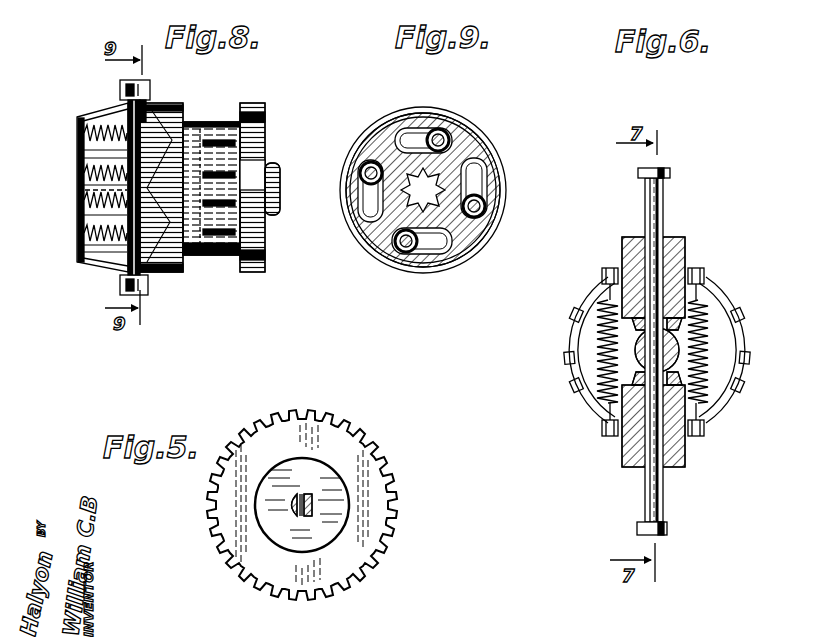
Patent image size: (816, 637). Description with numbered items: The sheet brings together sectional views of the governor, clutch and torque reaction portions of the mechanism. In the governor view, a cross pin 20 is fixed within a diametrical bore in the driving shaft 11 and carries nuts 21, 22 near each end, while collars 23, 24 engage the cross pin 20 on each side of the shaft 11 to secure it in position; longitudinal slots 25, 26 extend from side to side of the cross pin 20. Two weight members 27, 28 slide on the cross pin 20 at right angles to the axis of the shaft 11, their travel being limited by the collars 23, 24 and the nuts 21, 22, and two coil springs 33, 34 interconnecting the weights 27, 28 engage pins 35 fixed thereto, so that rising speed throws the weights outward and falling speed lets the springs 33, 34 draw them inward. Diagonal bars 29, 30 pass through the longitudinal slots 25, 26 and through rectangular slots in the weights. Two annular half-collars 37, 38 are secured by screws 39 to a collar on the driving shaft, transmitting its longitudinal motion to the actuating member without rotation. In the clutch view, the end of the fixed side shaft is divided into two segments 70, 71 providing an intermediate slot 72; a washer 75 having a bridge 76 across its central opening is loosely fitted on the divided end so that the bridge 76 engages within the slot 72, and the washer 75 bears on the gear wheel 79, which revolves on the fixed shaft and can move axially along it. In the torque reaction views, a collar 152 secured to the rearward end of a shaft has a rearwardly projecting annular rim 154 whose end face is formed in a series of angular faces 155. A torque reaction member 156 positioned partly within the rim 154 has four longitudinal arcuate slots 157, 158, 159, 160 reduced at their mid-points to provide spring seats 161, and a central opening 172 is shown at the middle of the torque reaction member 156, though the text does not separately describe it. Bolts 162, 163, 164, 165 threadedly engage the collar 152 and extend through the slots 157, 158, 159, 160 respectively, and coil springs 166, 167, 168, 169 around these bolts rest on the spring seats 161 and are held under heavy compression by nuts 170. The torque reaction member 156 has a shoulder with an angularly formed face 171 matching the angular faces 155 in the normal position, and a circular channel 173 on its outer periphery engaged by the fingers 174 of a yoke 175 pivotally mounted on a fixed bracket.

In FIG. 8, the nuts 170 is at (77, 124).
In FIG. 8, the fingers 174 is at (120, 93).
In FIG. 8, the yoke 175 is at (150, 82).
In FIG. 8, the angular faces 155 is at (168, 110).
In FIG. 8, the collar 152 is at (220, 122).
In FIG. 8, the torque reaction member 156 is at (80, 188).
In FIG. 8, the coil spring 167 is at (85, 197).
In FIG. 9, the coil spring 167 is at (488, 205).
In FIG. 8, the bolt 163 is at (85, 217).
In FIG. 9, the bolt 163 is at (492, 212).
In FIG. 8, the circular channel 173 is at (122, 282).
In FIG. 8, the angularly formed face 171 is at (150, 272).
In FIG. 8, the annular rim 154 is at (183, 265).
In FIG. 9, the spring seats 161 is at (403, 125).
In FIG. 9, the longitudinal arcuate slot 157 is at (421, 130).
In FIG. 9, the coil spring 166 is at (448, 130).
In FIG. 9, the bolt 162 is at (445, 132).
In FIG. 9, the longitudinal arcuate slot 160 is at (365, 195).
In FIG. 9, the bolt 165 is at (358, 162).
In FIG. 9, the coil spring 169 is at (366, 172).
In FIG. 9, the longitudinal arcuate slot 158 is at (484, 175).
In FIG. 9, the longitudinal arcuate slot 159 is at (440, 253).
In FIG. 9, the bolt 164 is at (380, 250).
In FIG. 9, the coil spring 168 is at (405, 252).
In FIG. 9, the intermediate slot 172 is at (423, 190).
In FIG. 6, the nut 21 is at (670, 173).
In FIG. 6, the longitudinal slot 25 is at (664, 201).
In FIG. 6, the weight member 27 is at (685, 242).
In FIG. 6, the weight member 28 is at (625, 468).
In FIG. 6, the diagonal bar 29 is at (678, 272).
In FIG. 6, the diagonal bar 30 is at (625, 447).
In FIG. 6, the shaft 11 is at (672, 345).
In FIG. 6, the annular half-collar 37 is at (570, 323).
In FIG. 6, the annular half-collar 38 is at (568, 357).
In FIG. 6, the screws 39 is at (575, 313).
In FIG. 6, the coil spring 34 is at (600, 300).
In FIG. 6, the coil spring 33 is at (706, 315).
In FIG. 6, the collar 23 is at (700, 296).
In FIG. 6, the cross pin 20 is at (712, 358).
In FIG. 6, the collar 24 is at (700, 400).
In FIG. 6, the pins 35 is at (706, 276).
In FIG. 6, the longitudinal slot 26 is at (652, 500).
In FIG. 6, the nut 22 is at (640, 528).
In FIG. 5, the gear wheel 79 is at (330, 432).
In FIG. 5, the intermediate slot 72 is at (312, 490).
In FIG. 5, the washer 75 is at (316, 514).
In FIG. 5, the bridge 76 is at (290, 498).
In FIG. 5, the segment 70 is at (295, 515).
In FIG. 5, the segment 71 is at (312, 518).